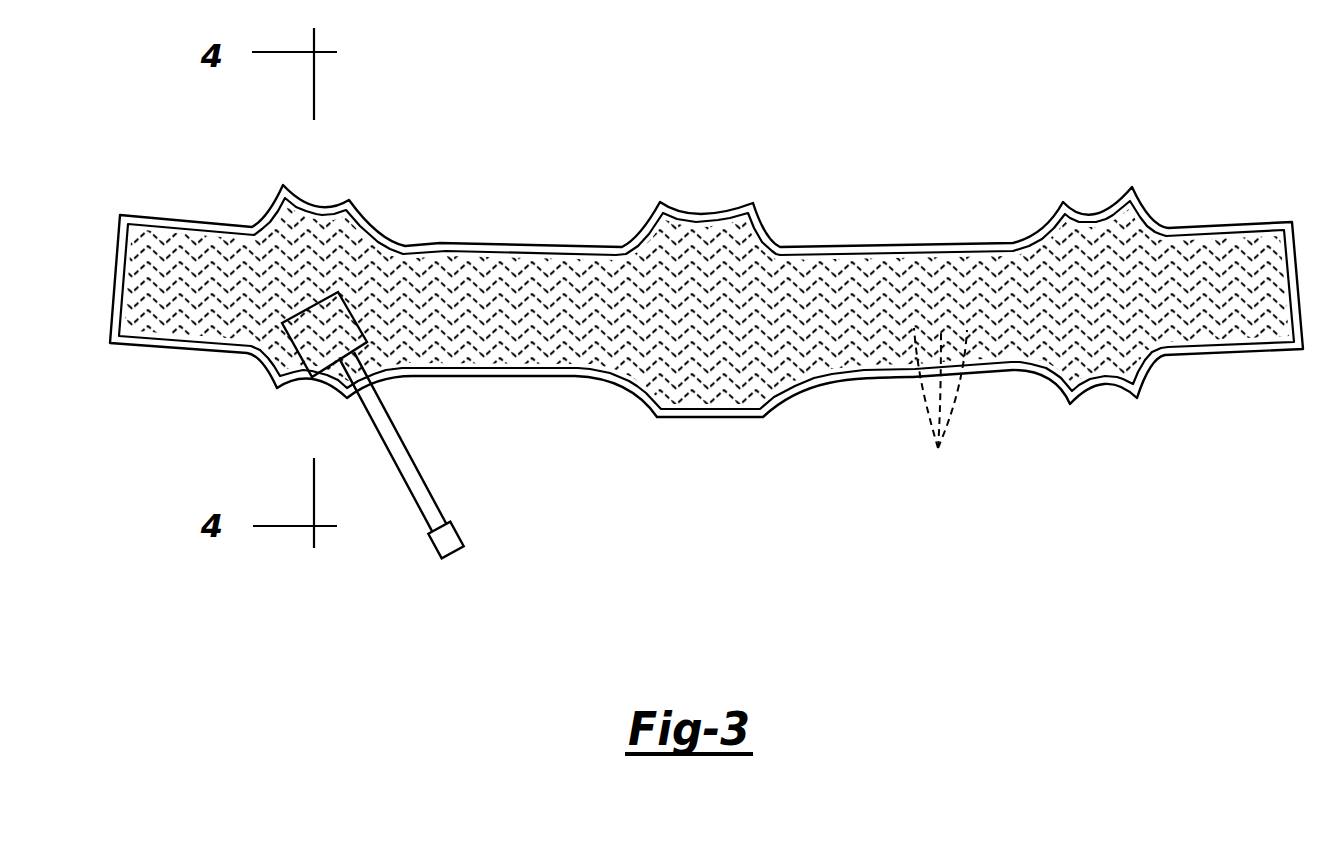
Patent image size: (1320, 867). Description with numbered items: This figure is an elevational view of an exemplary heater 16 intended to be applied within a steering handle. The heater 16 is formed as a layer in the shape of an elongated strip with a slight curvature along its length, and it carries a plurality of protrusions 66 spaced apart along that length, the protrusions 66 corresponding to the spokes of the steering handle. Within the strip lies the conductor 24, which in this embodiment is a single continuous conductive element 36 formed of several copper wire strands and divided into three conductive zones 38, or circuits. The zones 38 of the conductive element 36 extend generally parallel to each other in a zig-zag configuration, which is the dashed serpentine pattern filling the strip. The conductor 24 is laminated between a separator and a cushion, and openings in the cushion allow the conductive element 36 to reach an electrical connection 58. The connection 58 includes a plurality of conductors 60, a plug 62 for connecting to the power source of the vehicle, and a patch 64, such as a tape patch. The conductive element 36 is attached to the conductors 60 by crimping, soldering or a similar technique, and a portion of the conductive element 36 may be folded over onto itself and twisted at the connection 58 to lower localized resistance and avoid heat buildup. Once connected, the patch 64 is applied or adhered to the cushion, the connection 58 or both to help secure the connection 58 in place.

The heater 16 is at (961, 194).
The conductor 24 is at (1150, 227).
The conductive element 36 is at (1223, 352).
The conductive zones 38 is at (940, 404).
The electrical connection 58 is at (378, 449).
The conductors 60 is at (415, 457).
The plug 62 is at (466, 534).
The patch 64 is at (268, 343).
The protrusions 66 is at (302, 220).